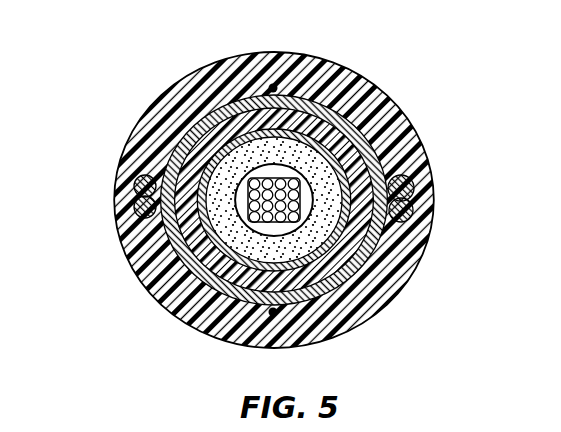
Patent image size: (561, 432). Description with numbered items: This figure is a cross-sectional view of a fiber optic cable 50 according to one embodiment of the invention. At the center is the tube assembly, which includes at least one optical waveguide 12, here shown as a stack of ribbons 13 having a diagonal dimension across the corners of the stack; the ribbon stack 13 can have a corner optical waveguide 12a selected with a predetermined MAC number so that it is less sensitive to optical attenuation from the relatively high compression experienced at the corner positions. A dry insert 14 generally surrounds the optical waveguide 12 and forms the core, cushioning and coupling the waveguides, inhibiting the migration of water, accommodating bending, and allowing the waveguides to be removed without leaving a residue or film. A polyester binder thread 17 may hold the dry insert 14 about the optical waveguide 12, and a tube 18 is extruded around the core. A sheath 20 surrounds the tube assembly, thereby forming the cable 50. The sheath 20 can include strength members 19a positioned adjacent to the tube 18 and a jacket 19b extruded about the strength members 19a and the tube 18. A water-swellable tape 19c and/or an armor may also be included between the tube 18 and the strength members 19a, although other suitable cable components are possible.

The cable 50 is at (193, 73).
The sheath 20 is at (151, 118).
The polyester binder thread 17 is at (273, 88).
The tube 18 is at (330, 105).
The dry insert 14 is at (345, 156).
The stack of ribbons 13 is at (297, 163).
The optical waveguide 12 is at (333, 277).
The corner optical waveguide 12a is at (248, 186).
The strength members 19a is at (135, 180).
The jacket 19b is at (137, 258).
The water-swellable tape 19c is at (345, 252).